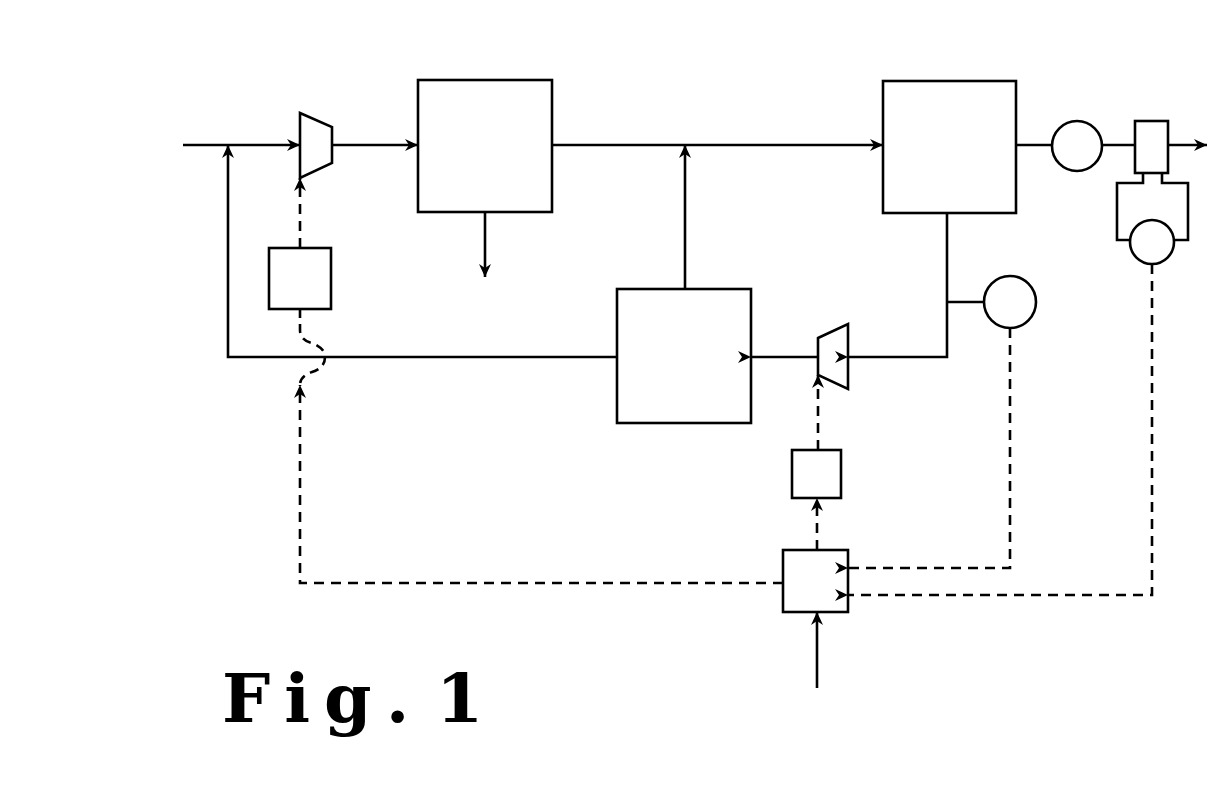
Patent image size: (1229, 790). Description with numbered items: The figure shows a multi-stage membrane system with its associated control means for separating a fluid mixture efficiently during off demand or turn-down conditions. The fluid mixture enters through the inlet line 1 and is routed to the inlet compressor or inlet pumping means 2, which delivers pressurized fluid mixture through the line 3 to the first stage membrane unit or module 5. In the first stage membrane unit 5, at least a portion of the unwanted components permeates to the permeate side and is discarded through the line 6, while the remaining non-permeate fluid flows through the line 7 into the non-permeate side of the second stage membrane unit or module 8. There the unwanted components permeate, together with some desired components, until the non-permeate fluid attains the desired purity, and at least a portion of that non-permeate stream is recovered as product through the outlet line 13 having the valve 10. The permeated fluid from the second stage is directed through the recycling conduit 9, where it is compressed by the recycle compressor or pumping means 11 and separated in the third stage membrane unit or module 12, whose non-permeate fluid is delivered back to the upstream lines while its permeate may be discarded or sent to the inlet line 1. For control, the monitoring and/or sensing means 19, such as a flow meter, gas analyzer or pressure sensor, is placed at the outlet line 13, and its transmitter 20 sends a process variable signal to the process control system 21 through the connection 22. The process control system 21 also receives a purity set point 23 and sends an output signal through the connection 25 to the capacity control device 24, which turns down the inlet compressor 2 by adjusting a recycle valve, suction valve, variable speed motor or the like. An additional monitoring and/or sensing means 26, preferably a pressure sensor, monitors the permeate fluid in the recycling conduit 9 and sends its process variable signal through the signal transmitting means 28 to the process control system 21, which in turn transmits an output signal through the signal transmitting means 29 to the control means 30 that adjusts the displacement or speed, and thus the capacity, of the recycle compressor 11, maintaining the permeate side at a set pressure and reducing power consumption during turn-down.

The inlet line 1 is at (207, 145).
The inlet compressor or inlet pumping means 2 is at (332, 128).
The line 3 is at (368, 147).
The first stage membrane unit or module 5 is at (462, 79).
The line 6 is at (485, 233).
The line 7 is at (767, 143).
The second stage membrane unit or module 8 is at (958, 81).
The recycling conduit 9 is at (947, 249).
The valve 10 is at (1057, 128).
The recycle compressor or pumping means 11 is at (818, 338).
The third stage membrane unit or module 12 is at (717, 284).
The outlet line 13 is at (1120, 145).
The means for monitoring and/or sensing 19 is at (1163, 135).
The transmitter 20 is at (1130, 247).
The process control system 21 is at (815, 581).
The connection 22 is at (1148, 452).
The purity set point 23 is at (817, 650).
The capacity control device 24 is at (332, 283).
The connection 25 is at (428, 583).
The means for monitoring and/or sensing 26 is at (1037, 307).
The signal transmitting means 28 is at (1010, 417).
The signal transmitting means 29 is at (818, 528).
The control means 30 is at (792, 471).